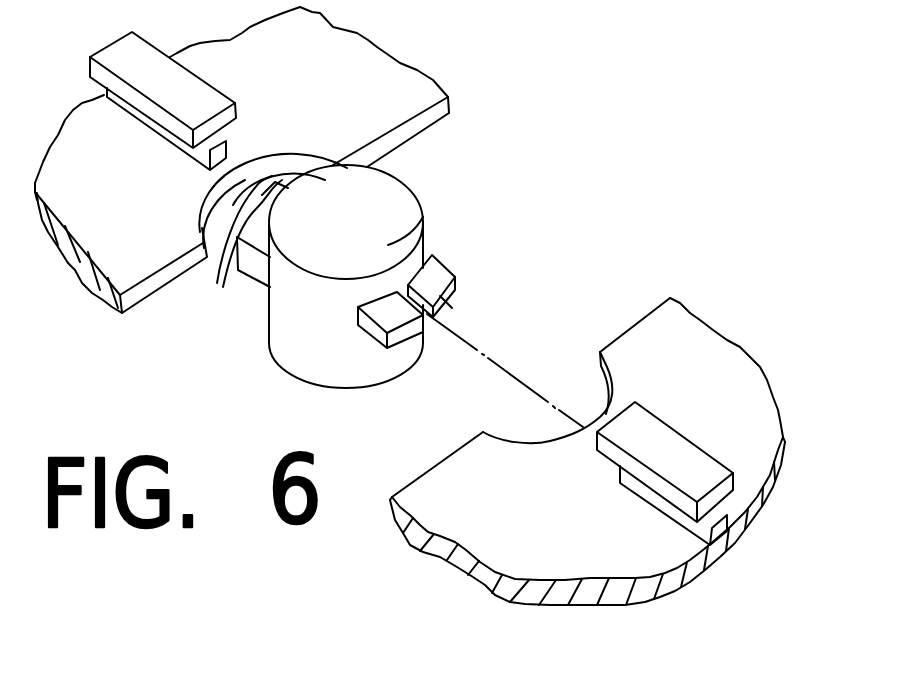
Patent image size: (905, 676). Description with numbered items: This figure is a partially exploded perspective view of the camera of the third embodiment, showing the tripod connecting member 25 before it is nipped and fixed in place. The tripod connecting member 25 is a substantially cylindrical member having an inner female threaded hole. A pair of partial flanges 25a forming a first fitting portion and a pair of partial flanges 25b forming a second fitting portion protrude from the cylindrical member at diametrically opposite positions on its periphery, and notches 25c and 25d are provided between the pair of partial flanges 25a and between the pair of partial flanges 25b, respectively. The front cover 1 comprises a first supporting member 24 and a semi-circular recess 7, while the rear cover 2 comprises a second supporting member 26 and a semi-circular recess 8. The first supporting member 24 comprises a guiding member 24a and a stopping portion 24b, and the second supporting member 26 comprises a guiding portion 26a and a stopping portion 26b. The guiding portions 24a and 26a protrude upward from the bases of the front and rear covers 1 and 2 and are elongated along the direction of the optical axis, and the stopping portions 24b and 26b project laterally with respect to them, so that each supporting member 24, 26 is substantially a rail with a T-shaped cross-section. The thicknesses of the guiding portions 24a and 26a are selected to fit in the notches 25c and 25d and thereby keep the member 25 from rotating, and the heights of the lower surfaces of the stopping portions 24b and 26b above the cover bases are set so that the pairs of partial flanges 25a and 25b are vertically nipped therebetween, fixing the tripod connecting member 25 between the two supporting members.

The front cover 1 is at (249, 160).
The rear cover 2 is at (587, 441).
The semi-circular recess 7 is at (197, 209).
The semi-circular recess 8 is at (523, 437).
The first supporting member 24 is at (220, 85).
The guiding member 24a is at (223, 143).
The stopping portion 24b is at (204, 101).
The tripod connecting member 25 is at (374, 304).
The partial flanges 25a is at (245, 257).
The partial flanges 25b is at (428, 275).
The notch 25c is at (270, 173).
The notch 25d is at (442, 313).
The second supporting member 26 is at (629, 470).
The guiding portion 26a is at (658, 502).
The stopping portion 26b is at (700, 472).